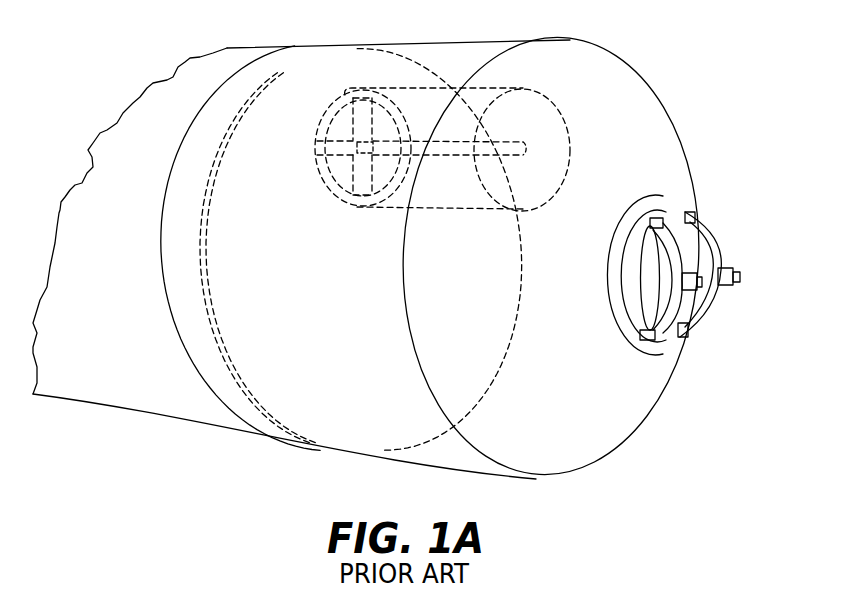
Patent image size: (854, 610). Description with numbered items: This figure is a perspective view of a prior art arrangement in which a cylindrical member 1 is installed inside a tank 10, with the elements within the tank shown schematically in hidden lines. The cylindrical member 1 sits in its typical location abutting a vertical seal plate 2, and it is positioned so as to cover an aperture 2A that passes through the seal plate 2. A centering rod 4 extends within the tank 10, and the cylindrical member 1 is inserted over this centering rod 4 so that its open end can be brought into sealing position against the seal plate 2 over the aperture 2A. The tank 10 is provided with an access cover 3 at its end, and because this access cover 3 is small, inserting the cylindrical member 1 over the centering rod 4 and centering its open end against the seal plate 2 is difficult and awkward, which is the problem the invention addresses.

The cylindrical member 1 is at (417, 90).
The vertical seal plate 2 is at (258, 410).
The aperture 2A is at (337, 98).
The access cover 3 is at (672, 210).
The centering rod 4 is at (449, 89).
The tank 10 is at (633, 430).